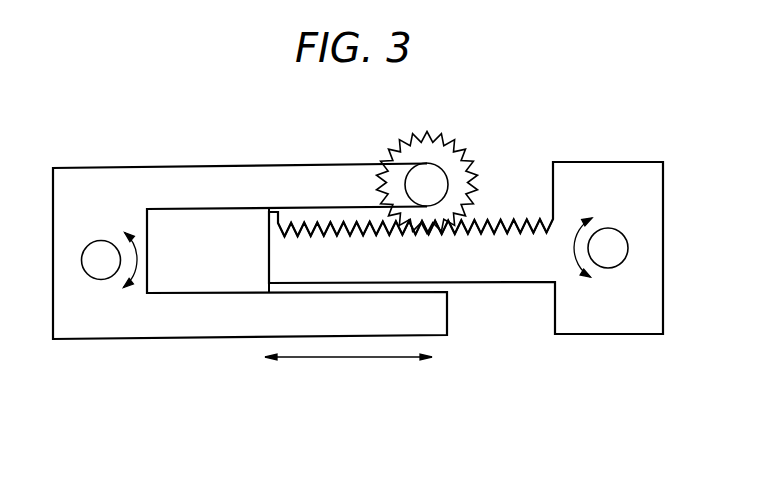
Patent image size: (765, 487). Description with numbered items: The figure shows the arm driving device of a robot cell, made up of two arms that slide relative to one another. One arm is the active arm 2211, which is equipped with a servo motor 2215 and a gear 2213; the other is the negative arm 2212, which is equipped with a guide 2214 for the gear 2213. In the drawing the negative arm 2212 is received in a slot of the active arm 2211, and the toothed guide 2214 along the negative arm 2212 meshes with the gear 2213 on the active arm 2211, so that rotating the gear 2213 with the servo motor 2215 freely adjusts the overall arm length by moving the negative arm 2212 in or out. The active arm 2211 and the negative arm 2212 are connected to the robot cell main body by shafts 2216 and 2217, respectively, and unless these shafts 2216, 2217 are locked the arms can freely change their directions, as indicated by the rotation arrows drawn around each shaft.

The active arm 2211 is at (117, 340).
The negative arm 2212 is at (603, 335).
The gear 2213 is at (433, 130).
The guide 2214 is at (522, 222).
The servo motor 2215 is at (423, 180).
The shaft 2216 is at (90, 282).
The shaft 2217 is at (608, 268).